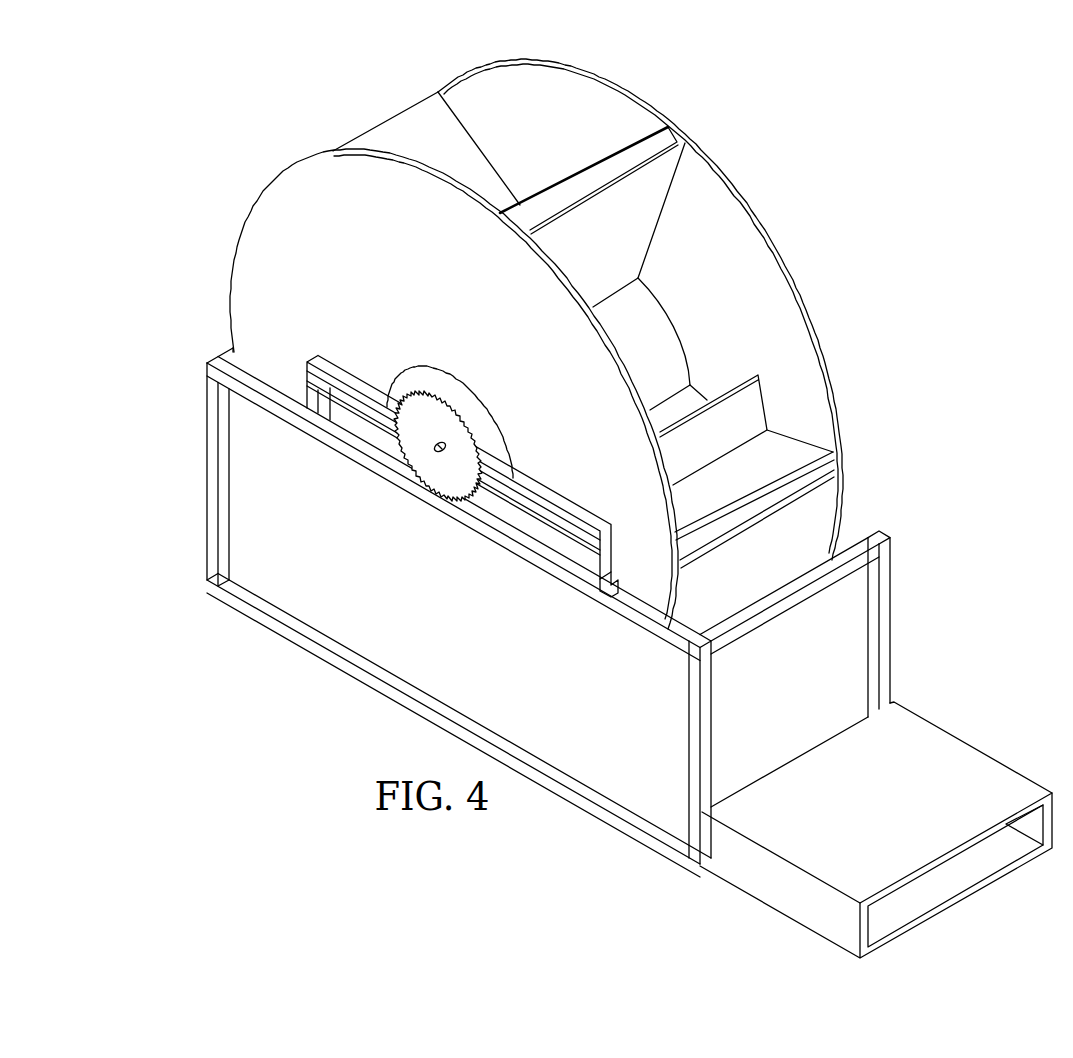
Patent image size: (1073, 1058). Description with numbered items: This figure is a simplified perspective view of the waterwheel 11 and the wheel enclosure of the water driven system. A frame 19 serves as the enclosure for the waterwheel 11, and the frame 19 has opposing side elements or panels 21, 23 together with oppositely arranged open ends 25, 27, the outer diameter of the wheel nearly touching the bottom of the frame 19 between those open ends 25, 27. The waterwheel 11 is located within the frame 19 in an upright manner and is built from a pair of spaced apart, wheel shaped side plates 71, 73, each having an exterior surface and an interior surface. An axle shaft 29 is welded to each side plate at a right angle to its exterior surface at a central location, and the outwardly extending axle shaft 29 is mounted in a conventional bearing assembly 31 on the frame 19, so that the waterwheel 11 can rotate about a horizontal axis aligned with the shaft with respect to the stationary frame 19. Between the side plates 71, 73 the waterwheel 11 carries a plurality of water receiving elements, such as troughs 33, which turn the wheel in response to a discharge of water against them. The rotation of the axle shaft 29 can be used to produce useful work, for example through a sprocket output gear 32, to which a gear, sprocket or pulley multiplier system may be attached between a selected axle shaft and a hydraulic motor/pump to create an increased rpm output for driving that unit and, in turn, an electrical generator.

The waterwheel 11 is at (351, 112).
The frame 19 is at (323, 640).
The side element or panel 21 is at (430, 668).
The side element or panel 23 is at (867, 520).
The open end 25 is at (843, 642).
The open end 27 is at (187, 462).
The axle shaft 29 is at (438, 446).
The bearing assembly 31 is at (492, 440).
The sprocket output gear 32 is at (463, 400).
The trough 33 is at (796, 430).
The side plate 71 is at (250, 310).
The side plate 73 is at (795, 285).